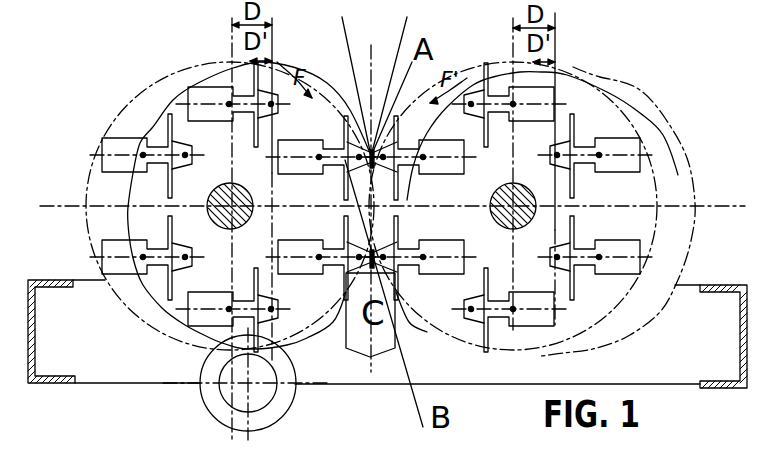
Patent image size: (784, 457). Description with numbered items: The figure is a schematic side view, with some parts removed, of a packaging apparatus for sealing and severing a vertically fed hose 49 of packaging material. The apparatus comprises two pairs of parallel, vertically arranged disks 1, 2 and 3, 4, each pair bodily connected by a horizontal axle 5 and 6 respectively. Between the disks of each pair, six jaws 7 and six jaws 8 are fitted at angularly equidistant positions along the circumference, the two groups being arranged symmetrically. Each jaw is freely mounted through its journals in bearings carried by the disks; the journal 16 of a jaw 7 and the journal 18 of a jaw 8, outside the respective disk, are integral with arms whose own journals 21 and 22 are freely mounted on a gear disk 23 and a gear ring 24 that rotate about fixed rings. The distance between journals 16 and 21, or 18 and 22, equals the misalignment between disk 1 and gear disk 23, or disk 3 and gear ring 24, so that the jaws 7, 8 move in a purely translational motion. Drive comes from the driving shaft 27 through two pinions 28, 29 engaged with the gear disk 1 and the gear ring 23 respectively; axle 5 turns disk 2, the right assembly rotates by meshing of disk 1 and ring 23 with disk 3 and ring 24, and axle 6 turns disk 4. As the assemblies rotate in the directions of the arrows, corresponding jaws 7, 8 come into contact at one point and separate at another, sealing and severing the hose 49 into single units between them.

The disk 1 is at (223, 206).
The disk 2 is at (130, 100).
The disk 3 is at (558, 206).
The disk 4 is at (657, 200).
The axle 5 is at (220, 187).
The axle 6 is at (518, 185).
The jaw 7 is at (125, 165).
The jaw 8 is at (620, 148).
The journal 16 is at (143, 155).
The journal 18 is at (600, 155).
The journal 21 is at (183, 155).
The journal 22 is at (643, 157).
The gear disk 23 is at (88, 230).
The gear ring 24 is at (690, 258).
The driving shaft 27 is at (287, 384).
The pinion 28 is at (287, 384).
The pinion 29 is at (284, 404).
The hose 49 is at (409, 31).